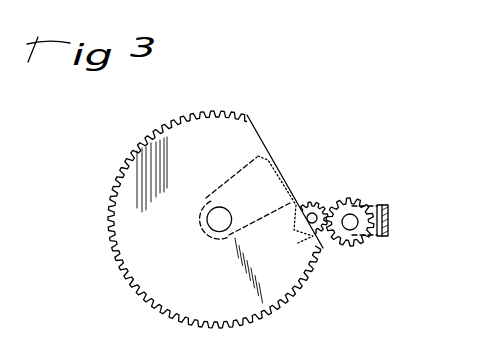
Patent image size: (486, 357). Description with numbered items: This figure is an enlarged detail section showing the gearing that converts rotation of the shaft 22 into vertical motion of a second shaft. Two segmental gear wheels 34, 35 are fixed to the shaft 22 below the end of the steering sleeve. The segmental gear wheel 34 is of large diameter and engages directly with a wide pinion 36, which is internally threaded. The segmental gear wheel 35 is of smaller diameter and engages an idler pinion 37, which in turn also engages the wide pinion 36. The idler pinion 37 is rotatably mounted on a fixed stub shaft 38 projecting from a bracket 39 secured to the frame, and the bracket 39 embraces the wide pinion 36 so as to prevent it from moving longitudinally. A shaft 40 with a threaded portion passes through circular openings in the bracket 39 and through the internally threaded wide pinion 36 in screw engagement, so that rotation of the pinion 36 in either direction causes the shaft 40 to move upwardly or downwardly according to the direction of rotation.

The shaft 22 is at (219, 219).
The segmental gear wheel 34 is at (141, 147).
The segmental gear wheel 35 is at (247, 171).
The wide pinion 36 is at (352, 200).
The idler pinion 37 is at (309, 203).
The stub shaft 38 is at (303, 221).
The bracket 39 is at (388, 208).
The shaft 40 is at (354, 226).